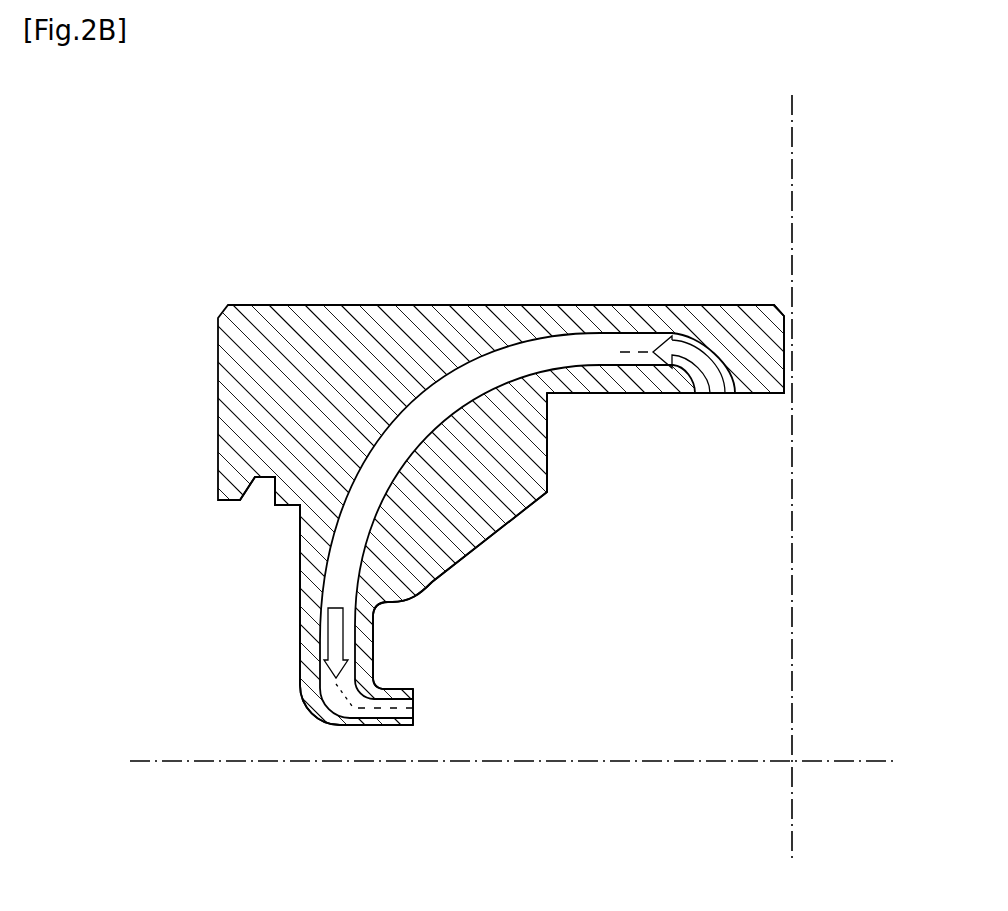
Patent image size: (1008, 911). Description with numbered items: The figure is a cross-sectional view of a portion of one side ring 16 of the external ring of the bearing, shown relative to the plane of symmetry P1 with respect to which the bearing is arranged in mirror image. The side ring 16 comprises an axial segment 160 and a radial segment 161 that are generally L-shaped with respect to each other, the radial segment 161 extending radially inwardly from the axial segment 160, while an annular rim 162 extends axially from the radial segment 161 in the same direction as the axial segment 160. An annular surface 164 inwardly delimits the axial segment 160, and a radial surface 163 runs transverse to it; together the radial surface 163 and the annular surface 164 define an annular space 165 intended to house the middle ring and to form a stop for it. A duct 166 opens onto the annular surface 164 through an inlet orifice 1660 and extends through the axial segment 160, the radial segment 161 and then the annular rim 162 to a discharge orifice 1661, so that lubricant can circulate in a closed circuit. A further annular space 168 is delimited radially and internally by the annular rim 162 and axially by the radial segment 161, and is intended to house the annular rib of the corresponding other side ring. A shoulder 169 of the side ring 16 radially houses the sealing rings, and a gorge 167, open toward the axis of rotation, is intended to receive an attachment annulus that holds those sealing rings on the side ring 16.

The side ring 16 is at (250, 306).
The axial segment 160 is at (607, 323).
The radial segment 161 is at (300, 633).
The annular rim 162 is at (370, 727).
The radial surface 163 is at (547, 470).
The annular surface 164 is at (655, 395).
The annular space 165 is at (610, 439).
The duct 166 is at (490, 372).
The gorge 167 is at (245, 493).
The annular space 168 is at (430, 661).
The shoulder 169 is at (283, 507).
The inlet orifice 1660 is at (710, 395).
The discharge orifice 1661 is at (413, 703).
The plane of symmetry P1 is at (792, 140).